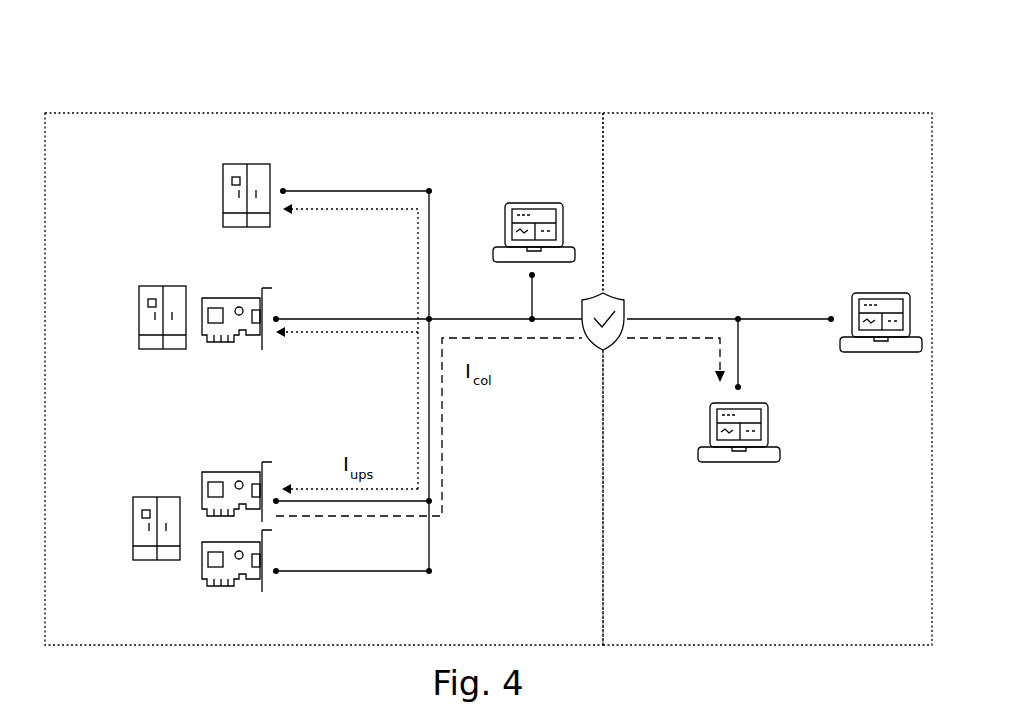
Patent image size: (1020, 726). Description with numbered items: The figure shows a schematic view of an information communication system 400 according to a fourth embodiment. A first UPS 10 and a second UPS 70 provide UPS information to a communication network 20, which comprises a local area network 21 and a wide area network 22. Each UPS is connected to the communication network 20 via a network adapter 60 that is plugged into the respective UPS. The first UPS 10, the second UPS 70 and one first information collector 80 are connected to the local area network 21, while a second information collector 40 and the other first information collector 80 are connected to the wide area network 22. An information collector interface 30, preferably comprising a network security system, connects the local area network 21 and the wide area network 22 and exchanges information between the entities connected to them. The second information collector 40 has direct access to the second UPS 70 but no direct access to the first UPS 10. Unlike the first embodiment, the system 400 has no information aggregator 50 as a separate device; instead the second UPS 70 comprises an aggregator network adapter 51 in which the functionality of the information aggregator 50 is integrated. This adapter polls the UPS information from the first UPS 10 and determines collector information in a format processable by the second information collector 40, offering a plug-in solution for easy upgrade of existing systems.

The information communication system 400 is at (760, 92).
The communication network 20 is at (349, 191).
The local area network 21 is at (324, 379).
The wide area network 22 is at (767, 379).
The first UPS 10 is at (181, 256).
The network adapter 60 is at (237, 443).
The second UPS 70 is at (127, 528).
The information aggregator 50 is at (288, 432).
The aggregator network adapter 51 is at (237, 473).
The information collector interface 30 is at (623, 318).
The first information collector 80 is at (707, 260).
The second information collector 40 is at (739, 459).